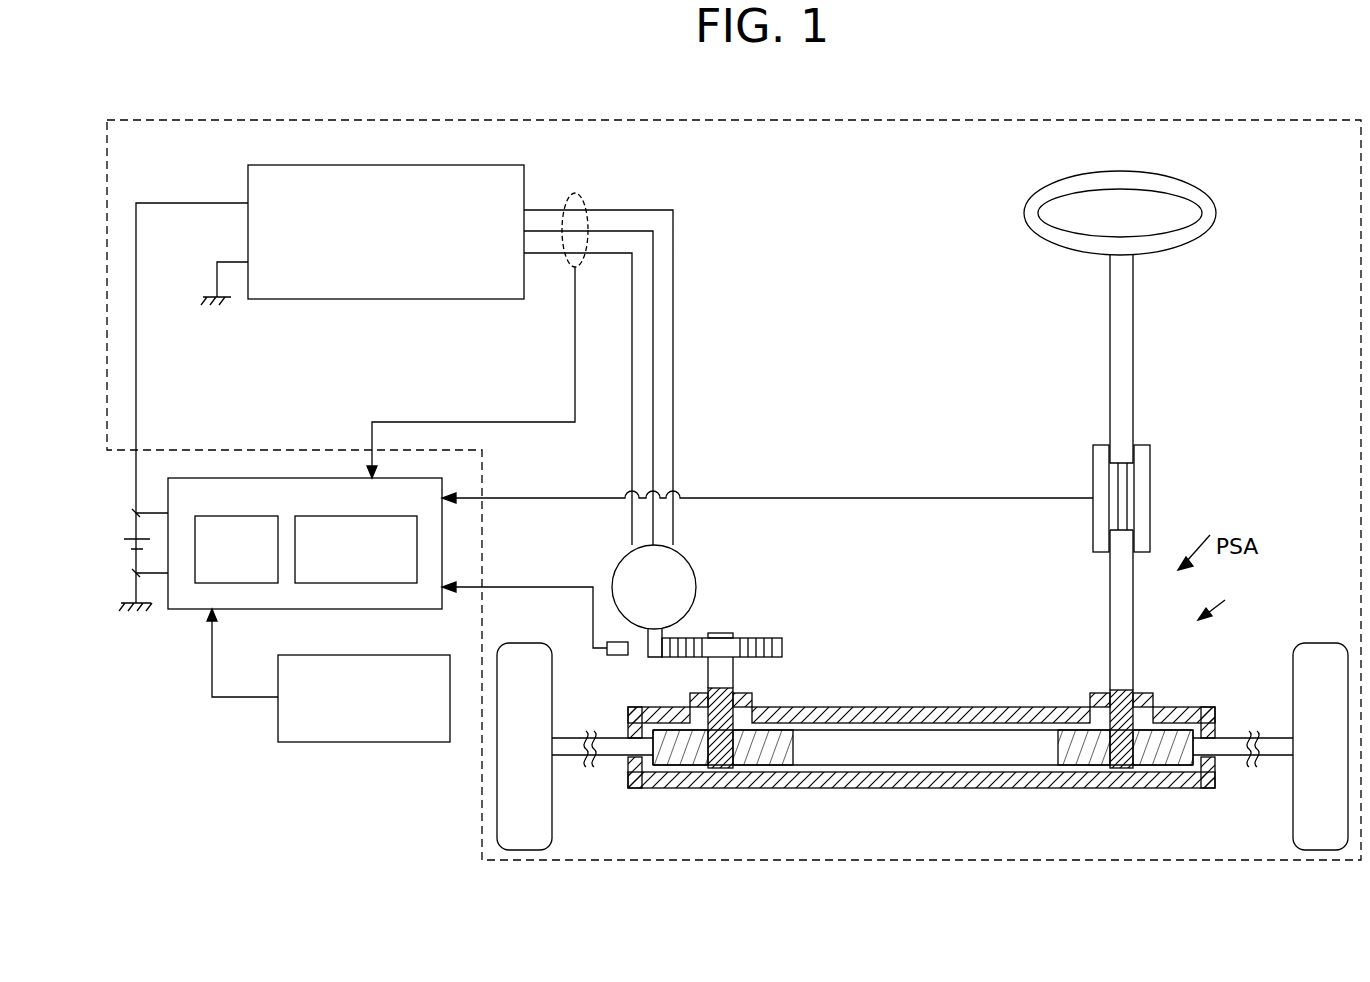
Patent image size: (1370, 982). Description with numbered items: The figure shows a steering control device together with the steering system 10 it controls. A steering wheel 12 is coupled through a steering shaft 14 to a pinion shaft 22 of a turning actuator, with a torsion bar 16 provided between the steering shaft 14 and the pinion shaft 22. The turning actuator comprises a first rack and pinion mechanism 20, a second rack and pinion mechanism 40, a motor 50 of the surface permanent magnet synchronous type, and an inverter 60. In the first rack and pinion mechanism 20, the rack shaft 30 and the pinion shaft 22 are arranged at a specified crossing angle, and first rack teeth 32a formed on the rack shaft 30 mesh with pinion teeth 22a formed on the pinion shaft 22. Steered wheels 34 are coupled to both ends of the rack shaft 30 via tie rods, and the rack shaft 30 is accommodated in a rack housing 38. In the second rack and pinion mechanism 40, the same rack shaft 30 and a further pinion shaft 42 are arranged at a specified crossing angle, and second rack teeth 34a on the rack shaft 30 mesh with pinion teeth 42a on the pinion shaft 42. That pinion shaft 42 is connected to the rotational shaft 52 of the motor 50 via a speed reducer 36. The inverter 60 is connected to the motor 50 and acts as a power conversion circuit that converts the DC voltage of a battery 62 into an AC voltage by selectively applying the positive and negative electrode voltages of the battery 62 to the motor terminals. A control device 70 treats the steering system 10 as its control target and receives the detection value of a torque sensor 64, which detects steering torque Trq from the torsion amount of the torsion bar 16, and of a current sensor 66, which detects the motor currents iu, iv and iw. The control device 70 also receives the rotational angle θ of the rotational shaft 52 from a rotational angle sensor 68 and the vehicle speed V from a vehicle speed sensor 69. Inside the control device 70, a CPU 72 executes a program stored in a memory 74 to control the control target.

The steering system 10 is at (1282, 119).
The steering wheel 12 is at (1208, 202).
The steering shaft 14 is at (1133, 352).
The torsion bar 16 is at (1127, 497).
The first rack and pinion mechanism 20 is at (1229, 604).
The pinion shaft 22 is at (1133, 642).
The pinion teeth 22a is at (1130, 700).
The rack shaft 30 is at (1070, 770).
The first rack teeth 32a is at (1170, 770).
The steered wheels 34 is at (527, 643).
The second rack teeth 34a is at (790, 768).
The speed reducer 36 is at (762, 638).
The rack housing 38 is at (960, 707).
The second rack and pinion mechanism 40 is at (921, 756).
The pinion shaft 42 is at (745, 692).
The pinion teeth 42a is at (712, 692).
The motor 50 is at (697, 575).
The rotational shaft 52 is at (648, 660).
The inverter 60 is at (470, 164).
The battery 62 is at (130, 537).
The torque sensor 64 is at (1093, 457).
The current sensor 66 is at (588, 198).
The rotational angle sensor 68 is at (612, 657).
The vehicle speed sensor 69 is at (390, 655).
The control device 70 is at (305, 509).
The CPU 72 is at (222, 516).
The memory 74 is at (360, 516).